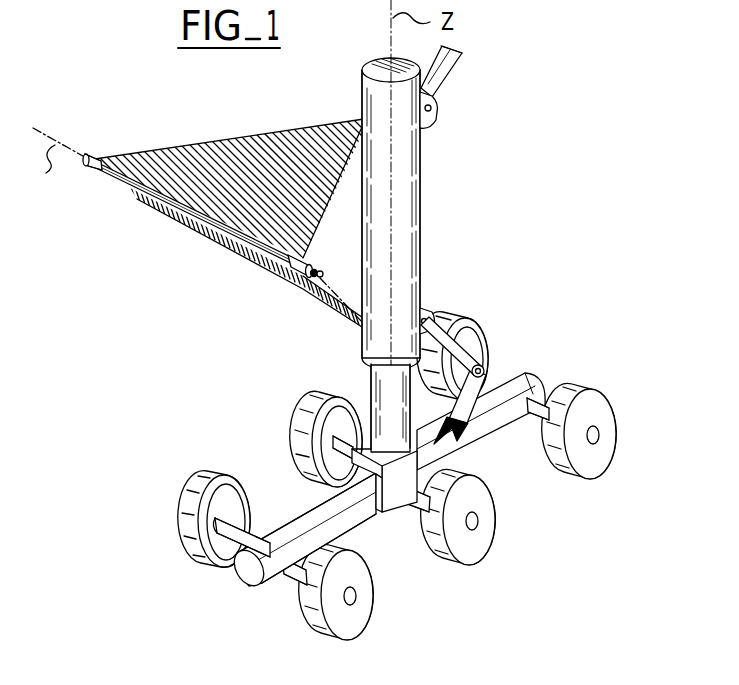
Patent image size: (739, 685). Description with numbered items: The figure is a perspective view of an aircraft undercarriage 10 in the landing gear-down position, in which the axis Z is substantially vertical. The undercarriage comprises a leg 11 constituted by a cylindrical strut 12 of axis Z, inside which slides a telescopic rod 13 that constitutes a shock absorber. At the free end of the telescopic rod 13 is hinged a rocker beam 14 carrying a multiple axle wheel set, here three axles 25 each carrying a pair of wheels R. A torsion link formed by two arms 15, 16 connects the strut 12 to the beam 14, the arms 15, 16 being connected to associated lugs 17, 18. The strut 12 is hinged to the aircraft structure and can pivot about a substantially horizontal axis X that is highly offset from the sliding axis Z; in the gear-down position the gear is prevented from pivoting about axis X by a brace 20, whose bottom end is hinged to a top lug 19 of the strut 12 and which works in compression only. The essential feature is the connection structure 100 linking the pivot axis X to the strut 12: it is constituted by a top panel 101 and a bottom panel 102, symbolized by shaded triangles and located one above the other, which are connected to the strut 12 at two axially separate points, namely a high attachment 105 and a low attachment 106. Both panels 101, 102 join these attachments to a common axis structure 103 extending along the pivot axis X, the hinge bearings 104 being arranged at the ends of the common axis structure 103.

The aircraft undercarriage 10 is at (586, 138).
The leg 11 is at (424, 279).
The cylindrical strut 12 is at (405, 248).
The telescopic rod 13 is at (386, 396).
The rocker beam 14 is at (296, 527).
The arm of torsion link 15 is at (472, 350).
The arm of torsion link 16 is at (466, 411).
The lug 17 is at (432, 314).
The lug 18 is at (464, 437).
The top lug 19 is at (437, 118).
The brace 20 is at (455, 65).
The axle 25 is at (543, 407).
The wheel R is at (468, 318).
The connection structure 100 is at (274, 220).
The top panel 101 is at (229, 165).
The bottom panel 102 is at (302, 282).
The common axis structure 103 is at (112, 180).
The hinge bearing 104 is at (94, 152).
The high attachment 105 is at (360, 117).
The low attachment 106 is at (378, 320).